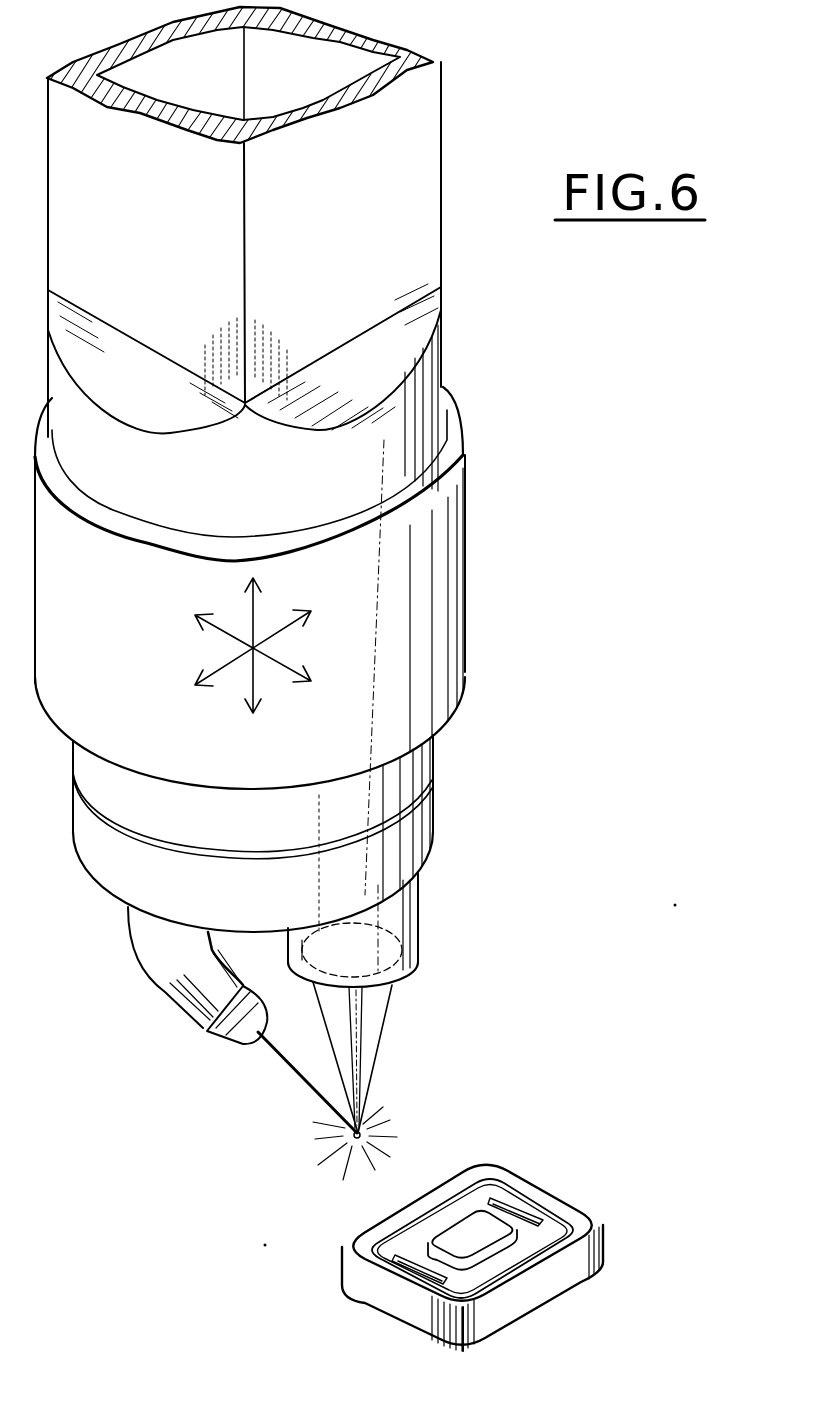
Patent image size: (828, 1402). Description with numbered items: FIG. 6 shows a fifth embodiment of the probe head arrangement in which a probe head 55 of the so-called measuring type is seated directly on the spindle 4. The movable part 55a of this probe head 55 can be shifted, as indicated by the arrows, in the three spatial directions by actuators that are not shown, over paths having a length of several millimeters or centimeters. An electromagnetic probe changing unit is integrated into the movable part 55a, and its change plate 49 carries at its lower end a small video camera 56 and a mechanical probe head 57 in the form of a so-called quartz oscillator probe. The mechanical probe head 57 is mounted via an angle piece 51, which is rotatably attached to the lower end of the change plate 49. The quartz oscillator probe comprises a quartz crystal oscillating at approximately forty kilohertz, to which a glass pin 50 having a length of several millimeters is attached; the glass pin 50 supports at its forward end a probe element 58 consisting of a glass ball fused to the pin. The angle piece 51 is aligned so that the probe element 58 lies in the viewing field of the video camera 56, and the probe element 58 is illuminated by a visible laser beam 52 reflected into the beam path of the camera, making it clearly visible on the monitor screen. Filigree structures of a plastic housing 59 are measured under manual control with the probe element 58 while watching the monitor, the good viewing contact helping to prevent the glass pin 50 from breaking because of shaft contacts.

The spindle 4 is at (413, 123).
The probe head 55 is at (450, 568).
The movable part 55a is at (415, 760).
The change plate 49 is at (417, 827).
The video camera 56 is at (403, 915).
The visible laser beam 52 is at (357, 1033).
The probe element 58 is at (370, 1112).
The glass pin 50 is at (297, 1073).
The angle piece 51 is at (180, 990).
The mechanical probe head 57 is at (233, 1035).
The plastic housing 59 is at (547, 1195).